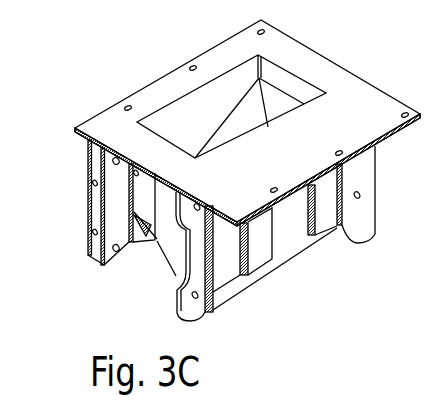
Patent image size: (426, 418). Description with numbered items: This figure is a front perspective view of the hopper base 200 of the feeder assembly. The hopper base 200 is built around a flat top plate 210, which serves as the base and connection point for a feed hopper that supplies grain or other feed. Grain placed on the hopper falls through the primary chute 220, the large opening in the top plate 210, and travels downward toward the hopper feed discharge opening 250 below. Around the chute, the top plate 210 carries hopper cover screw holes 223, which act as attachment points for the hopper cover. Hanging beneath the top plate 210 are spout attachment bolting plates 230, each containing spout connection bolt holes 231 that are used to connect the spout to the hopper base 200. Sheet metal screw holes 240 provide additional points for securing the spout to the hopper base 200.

The hopper base 200 is at (262, 280).
The top plate 210 is at (350, 146).
The primary chute 220 is at (180, 120).
The hopper cover screw holes 223 is at (228, 102).
The spout attachment bolting plates 230 is at (90, 256).
The spout connection bolt holes 231 is at (113, 160).
The sheet metal screw holes 240 is at (88, 204).
The hopper feed discharge opening 250 is at (150, 226).